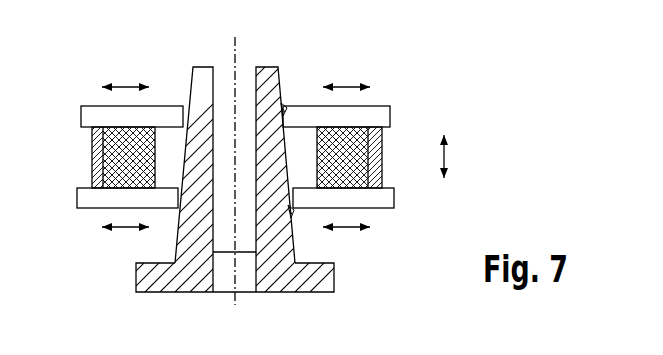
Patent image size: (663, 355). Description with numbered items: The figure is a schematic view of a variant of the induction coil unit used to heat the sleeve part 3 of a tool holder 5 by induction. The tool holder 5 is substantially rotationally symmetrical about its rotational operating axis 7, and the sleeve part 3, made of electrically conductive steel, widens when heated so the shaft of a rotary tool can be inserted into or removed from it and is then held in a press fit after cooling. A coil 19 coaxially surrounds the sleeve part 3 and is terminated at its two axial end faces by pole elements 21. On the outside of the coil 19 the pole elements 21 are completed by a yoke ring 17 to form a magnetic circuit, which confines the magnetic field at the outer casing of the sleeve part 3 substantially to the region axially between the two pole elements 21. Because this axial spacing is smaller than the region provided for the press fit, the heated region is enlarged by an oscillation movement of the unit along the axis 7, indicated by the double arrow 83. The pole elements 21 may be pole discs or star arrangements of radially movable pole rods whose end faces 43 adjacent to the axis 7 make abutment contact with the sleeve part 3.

The sleeve part 3 is at (279, 100).
The tool holder 5 is at (282, 265).
The rotational operating axis 7 is at (233, 55).
The yoke ring 17 is at (380, 178).
The coil 19 is at (92, 152).
The pole elements 21 is at (380, 107).
The end faces 43 is at (284, 110).
The double arrow 83 is at (447, 160).